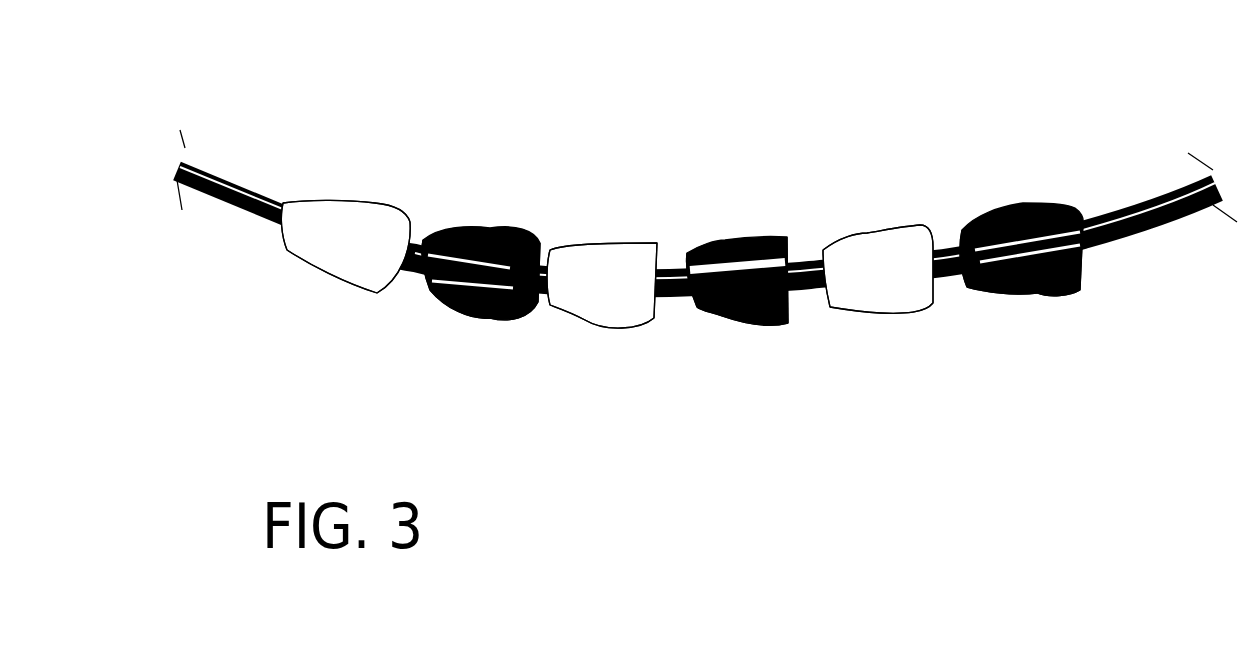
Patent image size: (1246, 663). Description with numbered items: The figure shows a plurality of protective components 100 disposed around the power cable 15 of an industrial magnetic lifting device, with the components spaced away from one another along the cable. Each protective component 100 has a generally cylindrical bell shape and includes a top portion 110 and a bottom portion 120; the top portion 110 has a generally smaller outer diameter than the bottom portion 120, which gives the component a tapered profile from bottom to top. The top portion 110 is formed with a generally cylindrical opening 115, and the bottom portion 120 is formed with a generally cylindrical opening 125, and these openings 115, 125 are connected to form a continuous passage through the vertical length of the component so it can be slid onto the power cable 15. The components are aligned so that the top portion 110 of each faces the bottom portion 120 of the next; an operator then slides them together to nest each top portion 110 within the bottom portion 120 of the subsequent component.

The power cable 15 is at (250, 186).
The protective component 100 is at (677, 278).
The top portion 110 is at (288, 252).
The opening 115 is at (287, 203).
The bottom portion 120 is at (383, 204).
The opening 125 is at (393, 282).